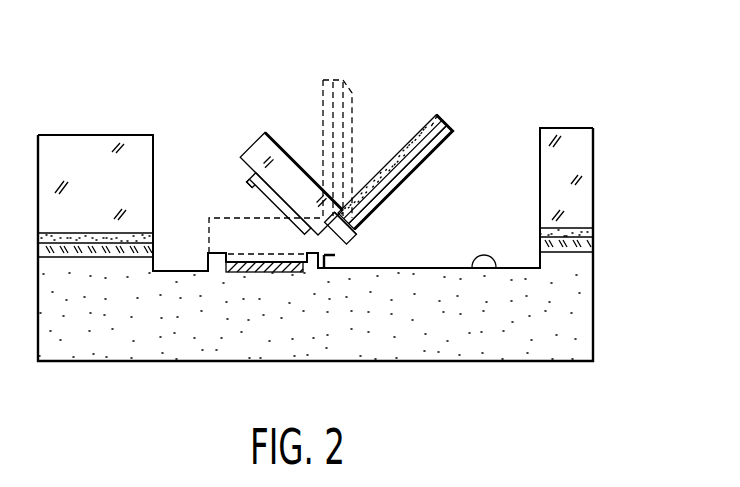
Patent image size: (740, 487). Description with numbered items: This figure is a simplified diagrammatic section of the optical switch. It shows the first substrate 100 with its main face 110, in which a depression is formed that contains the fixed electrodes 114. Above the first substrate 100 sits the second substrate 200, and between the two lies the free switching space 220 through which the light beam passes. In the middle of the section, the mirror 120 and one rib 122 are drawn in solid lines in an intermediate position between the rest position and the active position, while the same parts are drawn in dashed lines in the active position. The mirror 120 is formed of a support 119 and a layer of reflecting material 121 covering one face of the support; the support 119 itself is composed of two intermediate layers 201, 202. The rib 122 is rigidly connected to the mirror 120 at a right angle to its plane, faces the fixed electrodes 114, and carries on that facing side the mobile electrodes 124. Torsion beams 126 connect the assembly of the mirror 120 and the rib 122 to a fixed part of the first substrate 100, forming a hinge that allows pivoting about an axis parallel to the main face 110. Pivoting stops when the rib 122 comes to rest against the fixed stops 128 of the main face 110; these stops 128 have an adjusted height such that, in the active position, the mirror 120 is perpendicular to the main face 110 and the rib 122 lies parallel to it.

The first substrate 100 is at (578, 322).
The main face 110 is at (497, 267).
The fixed electrodes 114 is at (240, 273).
The support 119 is at (393, 153).
The mirror 120 is at (451, 122).
The layer of reflecting material 121 is at (430, 166).
The ribs 122 is at (260, 148).
The mobile electrodes 124 is at (253, 177).
The torsion beams 126 is at (350, 236).
The fixed stops 128 is at (228, 252).
The second substrate 200 is at (596, 159).
The intermediate layer 201 is at (582, 244).
The intermediate layer 202 is at (583, 230).
The free switching space 220 is at (501, 170).